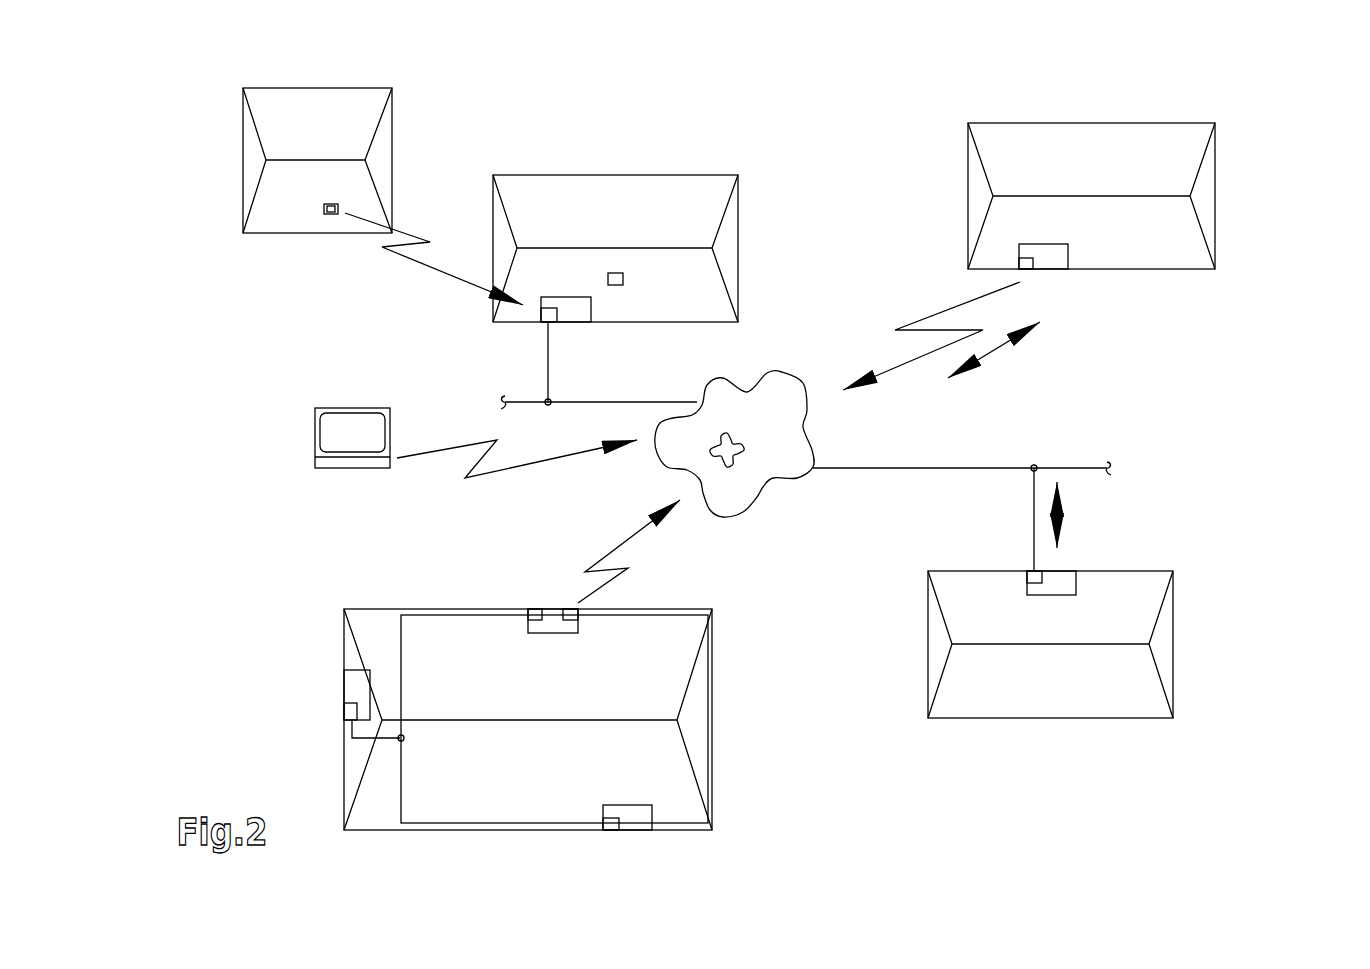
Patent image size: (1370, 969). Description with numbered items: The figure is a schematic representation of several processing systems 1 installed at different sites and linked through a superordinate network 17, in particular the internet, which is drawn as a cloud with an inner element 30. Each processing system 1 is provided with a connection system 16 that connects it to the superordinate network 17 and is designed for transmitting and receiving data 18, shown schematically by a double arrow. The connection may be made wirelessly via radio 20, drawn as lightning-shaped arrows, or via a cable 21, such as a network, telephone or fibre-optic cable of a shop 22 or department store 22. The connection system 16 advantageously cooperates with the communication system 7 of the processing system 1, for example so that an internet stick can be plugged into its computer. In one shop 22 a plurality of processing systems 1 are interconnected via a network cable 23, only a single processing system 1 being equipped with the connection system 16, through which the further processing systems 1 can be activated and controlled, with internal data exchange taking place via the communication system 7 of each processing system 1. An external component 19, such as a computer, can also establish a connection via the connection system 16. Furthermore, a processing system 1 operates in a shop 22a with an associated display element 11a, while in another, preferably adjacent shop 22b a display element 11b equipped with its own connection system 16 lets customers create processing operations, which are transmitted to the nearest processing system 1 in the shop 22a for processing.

The processing system 1 is at (573, 312).
The communication system 7 is at (533, 615).
The display element 11a is at (615, 280).
The display element 11b is at (328, 213).
The connection system 16 is at (548, 308).
The superordinate network 17 is at (782, 447).
The data 18 is at (1005, 356).
The external component 19 is at (335, 435).
The radio 20 is at (945, 312).
The cable 21 is at (644, 402).
The shop 22 is at (1180, 175).
The shop 22a is at (525, 200).
The shop 22b is at (355, 122).
The network cable 23 is at (405, 642).
The server 30 is at (726, 448).